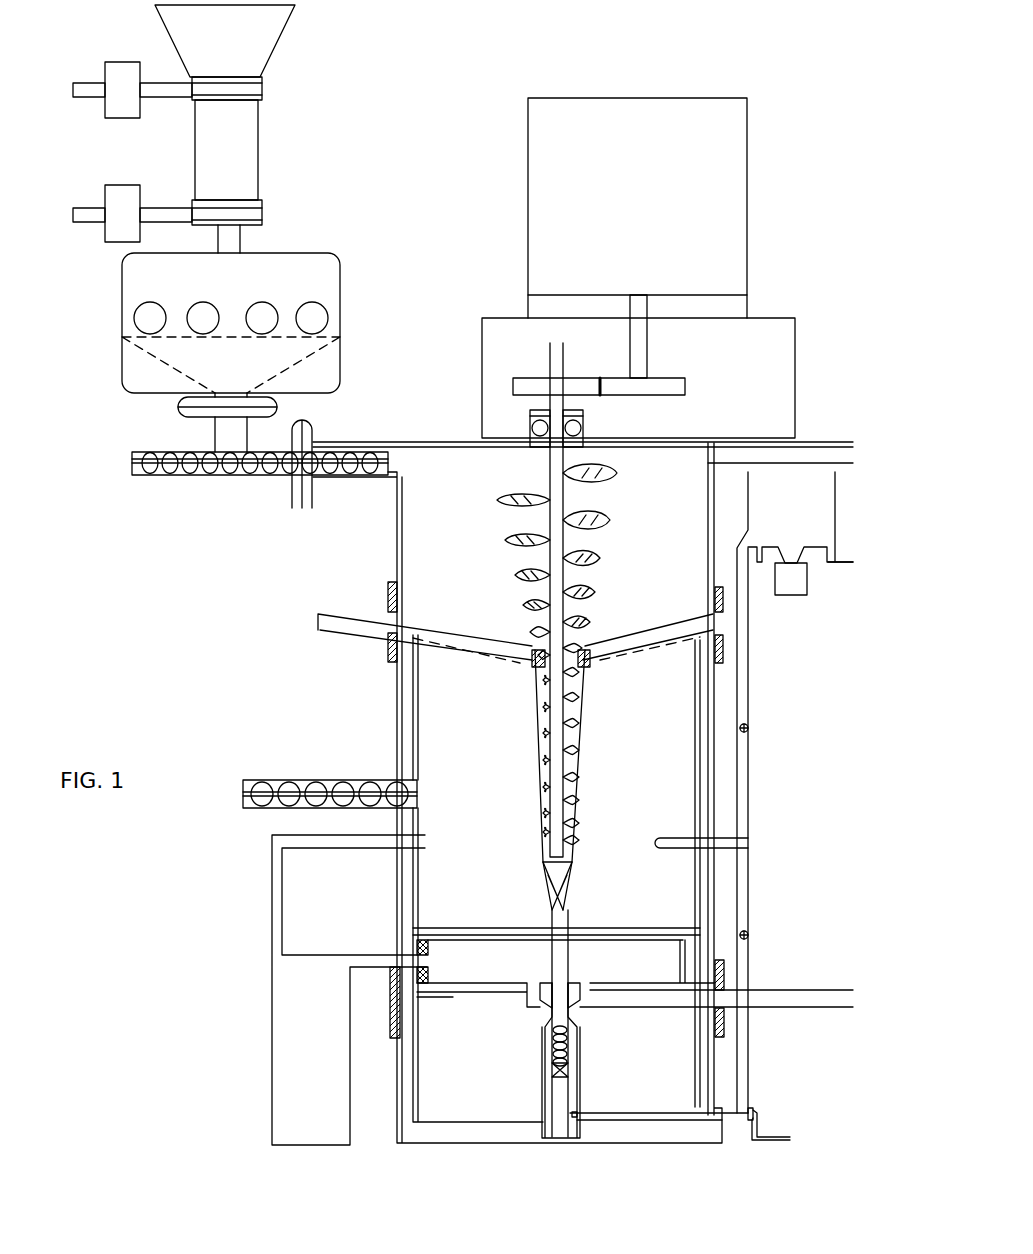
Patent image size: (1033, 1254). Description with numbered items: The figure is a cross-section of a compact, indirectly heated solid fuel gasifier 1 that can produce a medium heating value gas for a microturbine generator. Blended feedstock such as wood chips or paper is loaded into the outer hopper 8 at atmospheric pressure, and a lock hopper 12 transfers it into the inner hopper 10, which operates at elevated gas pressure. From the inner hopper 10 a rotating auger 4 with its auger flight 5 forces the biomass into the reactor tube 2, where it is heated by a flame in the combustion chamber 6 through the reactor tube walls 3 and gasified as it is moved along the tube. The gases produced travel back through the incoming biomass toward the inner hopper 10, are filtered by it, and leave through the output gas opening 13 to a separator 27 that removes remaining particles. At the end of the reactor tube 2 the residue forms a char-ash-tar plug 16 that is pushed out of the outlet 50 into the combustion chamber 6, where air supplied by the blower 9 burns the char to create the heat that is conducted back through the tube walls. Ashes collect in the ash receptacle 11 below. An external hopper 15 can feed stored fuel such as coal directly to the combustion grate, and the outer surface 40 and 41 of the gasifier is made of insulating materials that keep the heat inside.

The gasifier 1 is at (278, 650).
The reactor tube 2 is at (573, 708).
The reactor tube walls 3 is at (577, 767).
The auger 4 is at (540, 612).
The auger flight 5 is at (512, 540).
The combustion chamber 6 is at (633, 882).
The outer hopper 8 is at (250, 32).
The blower 9 is at (349, 990).
The inner hopper 10 is at (515, 596).
The ash receptacle 11 is at (665, 1061).
The lock hopper 12 is at (232, 145).
The output gas opening 13 is at (708, 468).
The external hopper 15 is at (250, 808).
The char-ash-tar plug 16 is at (572, 865).
The separator 27 is at (800, 544).
The outer surface 40 is at (412, 750).
The outer surface 41 is at (400, 723).
The outlet 50 is at (573, 900).